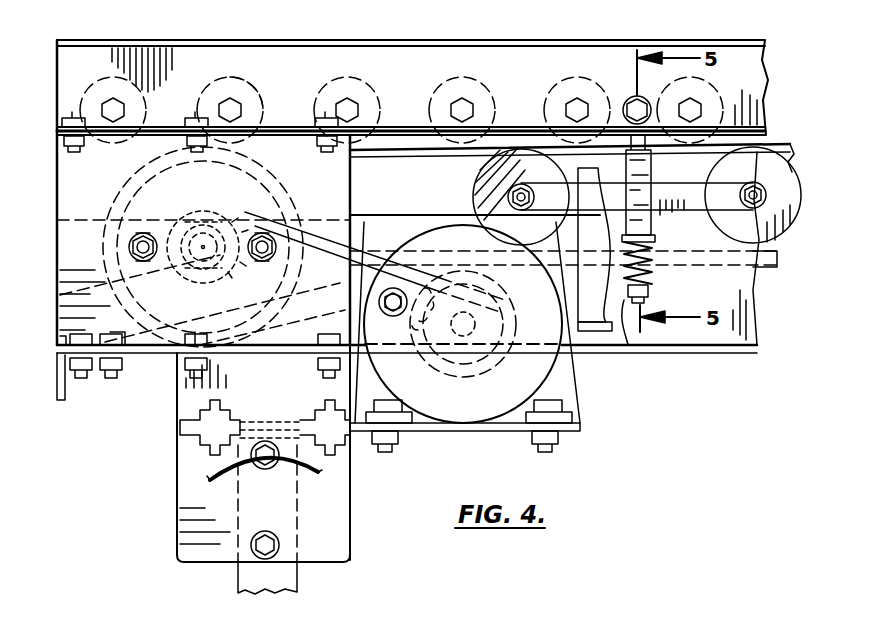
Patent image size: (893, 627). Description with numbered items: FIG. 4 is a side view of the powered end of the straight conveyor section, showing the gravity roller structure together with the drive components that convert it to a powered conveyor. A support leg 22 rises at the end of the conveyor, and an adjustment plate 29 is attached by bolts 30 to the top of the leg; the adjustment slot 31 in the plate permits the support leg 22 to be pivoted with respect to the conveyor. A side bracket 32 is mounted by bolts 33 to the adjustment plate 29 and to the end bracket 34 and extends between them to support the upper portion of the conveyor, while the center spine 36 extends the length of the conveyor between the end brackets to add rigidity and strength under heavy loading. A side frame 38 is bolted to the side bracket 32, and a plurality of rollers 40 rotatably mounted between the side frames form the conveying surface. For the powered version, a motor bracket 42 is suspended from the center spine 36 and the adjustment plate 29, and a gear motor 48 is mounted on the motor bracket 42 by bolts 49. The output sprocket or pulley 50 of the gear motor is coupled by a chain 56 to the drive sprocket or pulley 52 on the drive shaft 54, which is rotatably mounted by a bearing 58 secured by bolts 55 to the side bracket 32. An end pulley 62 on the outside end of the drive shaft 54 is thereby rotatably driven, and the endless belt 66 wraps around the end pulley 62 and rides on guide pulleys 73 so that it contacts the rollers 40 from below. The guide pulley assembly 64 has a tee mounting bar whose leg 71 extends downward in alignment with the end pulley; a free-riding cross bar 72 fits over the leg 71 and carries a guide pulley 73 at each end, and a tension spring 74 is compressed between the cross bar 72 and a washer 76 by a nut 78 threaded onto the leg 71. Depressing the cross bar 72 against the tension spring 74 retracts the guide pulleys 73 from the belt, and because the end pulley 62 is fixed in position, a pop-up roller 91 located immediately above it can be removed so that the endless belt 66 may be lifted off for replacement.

The support leg 22 is at (238, 582).
The adjustment plate 29 is at (350, 520).
The bolts 30 is at (266, 534).
The adjustment slot 31 is at (212, 478).
The side bracket 32 is at (352, 170).
The bolts 33 is at (196, 378).
The end bracket 34 is at (60, 400).
The center spine 36 is at (716, 345).
The side frame 38 is at (458, 46).
The rollers 40 is at (438, 82).
The motor bracket 42 is at (430, 432).
The gear motor 48 is at (604, 331).
The bolts 49 is at (386, 452).
The output sprocket or pulley 50 is at (412, 358).
The drive sprocket or pulley 52 is at (208, 308).
The drive shaft 54 is at (210, 222).
The bolts 55 is at (128, 250).
The chain 56 is at (368, 246).
The bearing 58 is at (186, 292).
The end pulley 62 is at (282, 192).
The guide pulley assembly 64 is at (755, 180).
The endless belt 66 is at (418, 150).
The leg 71 is at (655, 262).
The cross bar 72 is at (684, 190).
The guide pulley 73 is at (470, 200).
The tension spring 74 is at (655, 240).
The washer 76 is at (650, 292).
The nut 78 is at (628, 350).
The pop-up roller 91 is at (240, 70).